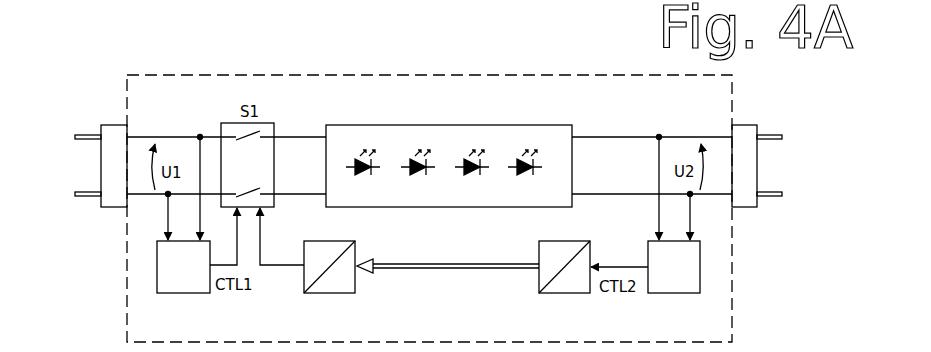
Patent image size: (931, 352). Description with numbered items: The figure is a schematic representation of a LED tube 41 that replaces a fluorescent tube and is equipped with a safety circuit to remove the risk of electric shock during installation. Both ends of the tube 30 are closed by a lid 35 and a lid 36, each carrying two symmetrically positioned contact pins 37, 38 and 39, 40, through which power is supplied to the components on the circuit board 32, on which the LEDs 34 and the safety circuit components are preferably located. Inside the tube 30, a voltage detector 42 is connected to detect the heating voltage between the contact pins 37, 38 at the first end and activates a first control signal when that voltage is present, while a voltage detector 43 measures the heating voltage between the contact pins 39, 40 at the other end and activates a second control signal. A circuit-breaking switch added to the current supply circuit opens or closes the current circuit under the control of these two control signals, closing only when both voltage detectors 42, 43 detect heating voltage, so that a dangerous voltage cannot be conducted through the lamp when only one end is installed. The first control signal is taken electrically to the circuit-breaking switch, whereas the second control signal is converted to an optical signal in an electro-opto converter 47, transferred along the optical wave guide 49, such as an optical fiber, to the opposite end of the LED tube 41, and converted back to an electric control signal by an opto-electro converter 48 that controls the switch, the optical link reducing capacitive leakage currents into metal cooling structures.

The tube 30 is at (527, 75).
The LED tube 41 is at (429, 173).
The circuit board 32 is at (440, 207).
The LEDs 34 is at (368, 174).
The lid 35 is at (115, 124).
The lid 36 is at (750, 122).
The contact pin 37 is at (88, 133).
The contact pin 38 is at (88, 198).
The contact pin 39 is at (778, 133).
The contact pin 40 is at (770, 197).
The voltage detector 42 is at (210, 294).
The voltage detector 43 is at (648, 294).
The electro-opto converter 47 is at (539, 294).
The opto-electro converter 48 is at (355, 294).
The optical wave guide 49 is at (403, 269).